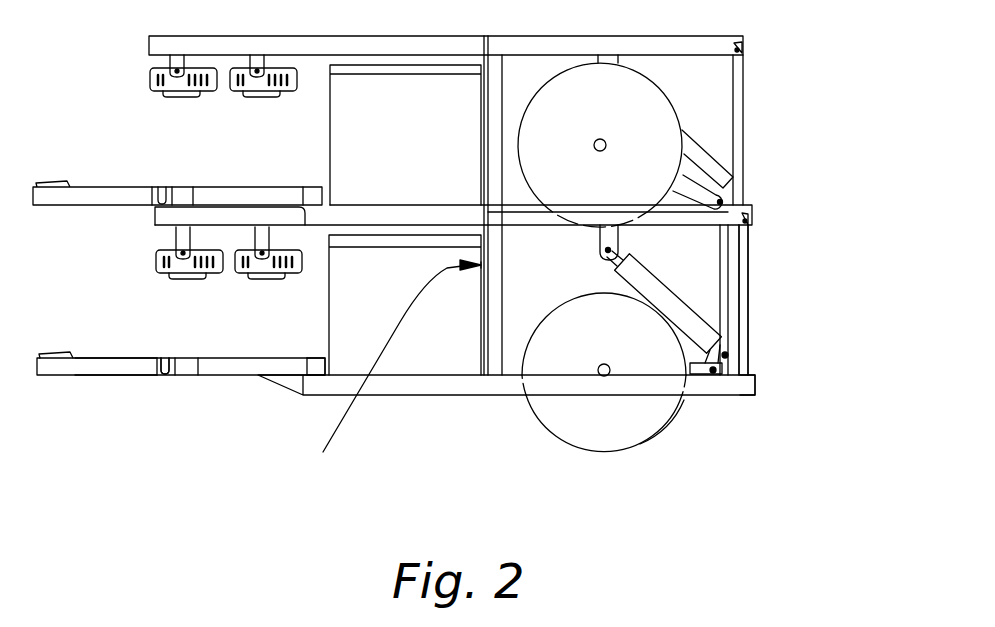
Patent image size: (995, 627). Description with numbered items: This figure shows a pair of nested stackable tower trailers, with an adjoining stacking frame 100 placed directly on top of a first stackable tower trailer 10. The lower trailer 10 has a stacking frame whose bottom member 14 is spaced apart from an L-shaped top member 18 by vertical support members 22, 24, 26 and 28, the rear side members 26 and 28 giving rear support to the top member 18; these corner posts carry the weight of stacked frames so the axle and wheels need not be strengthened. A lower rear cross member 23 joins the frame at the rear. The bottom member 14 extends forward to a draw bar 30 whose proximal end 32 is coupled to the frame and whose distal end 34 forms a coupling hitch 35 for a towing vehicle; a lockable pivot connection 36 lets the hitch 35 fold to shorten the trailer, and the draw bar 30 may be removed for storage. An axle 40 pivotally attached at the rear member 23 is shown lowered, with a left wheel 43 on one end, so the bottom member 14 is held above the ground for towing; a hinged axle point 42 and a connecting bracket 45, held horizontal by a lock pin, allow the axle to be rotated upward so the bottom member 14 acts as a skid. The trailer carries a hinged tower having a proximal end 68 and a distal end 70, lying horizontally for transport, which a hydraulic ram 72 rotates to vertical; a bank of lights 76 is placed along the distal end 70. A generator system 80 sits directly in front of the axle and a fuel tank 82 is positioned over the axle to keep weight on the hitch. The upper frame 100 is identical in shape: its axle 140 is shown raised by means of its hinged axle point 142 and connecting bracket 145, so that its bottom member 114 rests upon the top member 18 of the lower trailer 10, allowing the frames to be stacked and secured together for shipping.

The adjoining stacking frame 100 is at (767, 82).
The stackable tower trailer 10 is at (773, 263).
The bottom member 14 is at (757, 398).
The top member 18 is at (752, 206).
The vertical support member 22 is at (752, 338).
The lower rear cross member 23 is at (758, 393).
The vertical support member 24 is at (498, 380).
The vertical support member 26 is at (389, 375).
The vertical support member 28 is at (504, 288).
The draw bar 30 is at (222, 375).
The proximal end 32 is at (315, 357).
The distal end 34 is at (107, 375).
The coupling hitch 35 is at (42, 375).
The lockable pivot connection 36 is at (163, 375).
The axle 40 is at (604, 376).
The hinged axle point 42 is at (752, 367).
The left wheel 43 is at (682, 402).
The connecting bracket 45 is at (690, 363).
The proximal end 68 is at (748, 224).
The distal end 70 is at (157, 225).
The hydraulic ram 72 is at (667, 288).
The bank of lights 76 is at (247, 275).
The generator system 80 is at (403, 352).
The fuel tank 82 is at (520, 292).
The bottom member 114 is at (355, 210).
The axle 140 is at (602, 152).
The hinged axle point 142 is at (724, 199).
The connecting bracket 145 is at (688, 190).